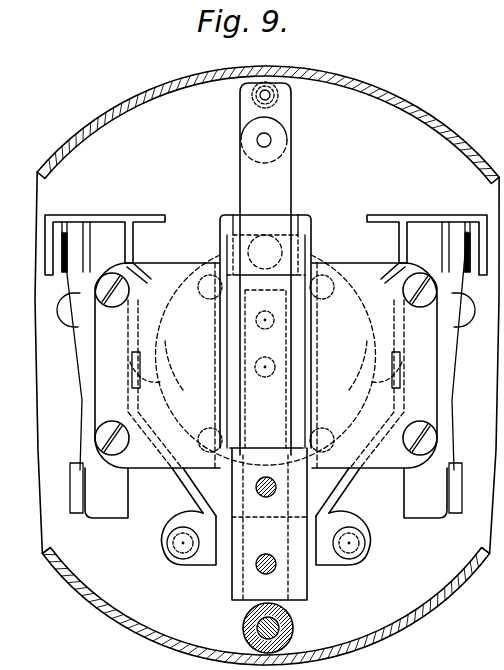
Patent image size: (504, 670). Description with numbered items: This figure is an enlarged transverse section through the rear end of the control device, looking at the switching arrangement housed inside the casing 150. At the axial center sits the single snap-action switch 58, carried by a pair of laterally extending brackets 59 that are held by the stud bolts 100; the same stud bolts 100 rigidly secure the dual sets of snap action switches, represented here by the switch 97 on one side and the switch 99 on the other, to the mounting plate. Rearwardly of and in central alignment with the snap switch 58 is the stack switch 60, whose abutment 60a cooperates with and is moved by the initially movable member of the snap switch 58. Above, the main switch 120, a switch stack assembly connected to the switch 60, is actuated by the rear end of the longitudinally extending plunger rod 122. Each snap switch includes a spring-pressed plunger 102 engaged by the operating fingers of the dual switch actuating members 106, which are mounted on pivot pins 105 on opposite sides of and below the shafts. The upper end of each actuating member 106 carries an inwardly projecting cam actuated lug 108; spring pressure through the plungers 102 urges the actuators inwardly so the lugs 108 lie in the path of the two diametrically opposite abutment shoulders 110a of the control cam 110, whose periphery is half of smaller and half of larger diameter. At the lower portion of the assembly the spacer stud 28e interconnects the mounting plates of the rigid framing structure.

The cylindrical casing wall 150 is at (358, 80).
The main switch 120 is at (270, 199).
The plunger rod 122 is at (249, 96).
The snap-action switch 58 is at (298, 290).
The stack switch 60 is at (279, 344).
The abutment 60a is at (257, 376).
The control cam 110 is at (198, 306).
The abutment shoulders 110a is at (163, 368).
The spring-pressed plunger 102 is at (134, 348).
The cam actuated lug 108 is at (177, 357).
The stud bolts 100 is at (407, 287).
The snap action switch 99 is at (108, 228).
The snap action switch 97 is at (415, 228).
The mounting brackets 59 is at (148, 462).
The switch actuating members 106 is at (188, 492).
The pivot pins 105 is at (183, 548).
The spacer stud 28e is at (297, 619).